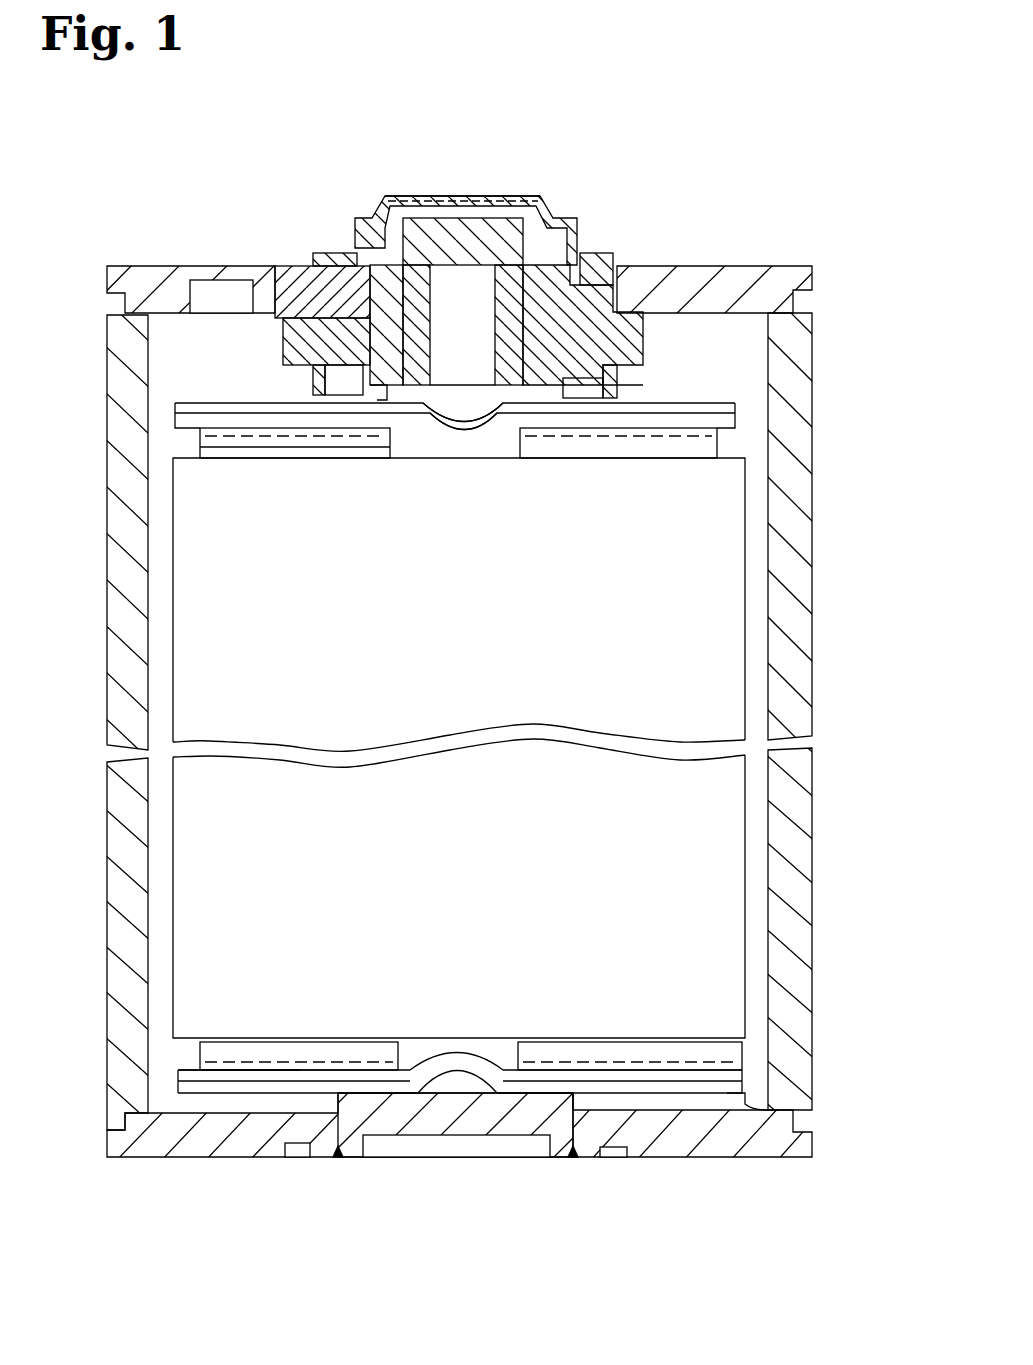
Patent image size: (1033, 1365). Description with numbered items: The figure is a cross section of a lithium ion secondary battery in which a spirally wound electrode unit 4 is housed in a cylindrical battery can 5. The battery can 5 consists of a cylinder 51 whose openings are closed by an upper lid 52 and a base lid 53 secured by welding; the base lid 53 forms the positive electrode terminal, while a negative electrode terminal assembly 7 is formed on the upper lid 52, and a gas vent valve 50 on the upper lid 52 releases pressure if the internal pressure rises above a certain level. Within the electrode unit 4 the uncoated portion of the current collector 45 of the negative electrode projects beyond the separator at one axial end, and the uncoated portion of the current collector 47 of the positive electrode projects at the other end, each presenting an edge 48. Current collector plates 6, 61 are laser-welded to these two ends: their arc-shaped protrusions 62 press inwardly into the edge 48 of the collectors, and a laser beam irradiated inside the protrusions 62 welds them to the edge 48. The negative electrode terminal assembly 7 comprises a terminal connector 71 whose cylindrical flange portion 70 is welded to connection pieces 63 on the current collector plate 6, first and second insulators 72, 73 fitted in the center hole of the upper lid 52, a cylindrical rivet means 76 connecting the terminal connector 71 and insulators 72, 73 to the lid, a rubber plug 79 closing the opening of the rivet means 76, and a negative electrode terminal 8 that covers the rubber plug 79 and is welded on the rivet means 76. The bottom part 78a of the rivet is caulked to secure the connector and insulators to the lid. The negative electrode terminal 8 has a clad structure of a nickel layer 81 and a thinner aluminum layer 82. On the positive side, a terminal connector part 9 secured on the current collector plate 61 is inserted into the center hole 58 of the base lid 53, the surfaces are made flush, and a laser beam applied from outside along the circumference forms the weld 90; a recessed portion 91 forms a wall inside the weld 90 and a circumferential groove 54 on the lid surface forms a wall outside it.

The spirally wound electrode unit 4 is at (485, 692).
The battery can 5 is at (492, 716).
The current collector plate 6 is at (514, 720).
The negative electrode terminal assembly 7 is at (476, 299).
The negative electrode terminal 8 is at (521, 191).
The terminal connector part 9 is at (460, 1148).
The current collector of the negative electrode 45 is at (200, 449).
The current collector of the positive electrode 47 is at (228, 1050).
The edge 48 is at (200, 404).
The gas vent valve 50 is at (225, 266).
The cylinder 51 is at (814, 450).
The upper lid 52 is at (476, 250).
The base lid 53 is at (474, 1165).
The groove 54 is at (293, 1157).
The hole 58 is at (575, 1157).
The current collector plate 61 is at (762, 1108).
The arc-shaped protrusions 62 is at (466, 430).
The connection pieces 63 is at (345, 390).
The cylindrical flange portion 70 is at (625, 378).
The terminal connector 71 is at (645, 346).
The first insulator 72 is at (283, 341).
The second insulator 73 is at (601, 256).
The rivet means 76 is at (353, 247).
The bottom part of the cylindrical part 78a is at (390, 422).
The rubber plug 79 is at (463, 245).
The nickel layer 81 is at (518, 195).
The aluminum layer 82 is at (530, 192).
The weld 90 is at (338, 1157).
The recessed portion 91 is at (548, 1140).